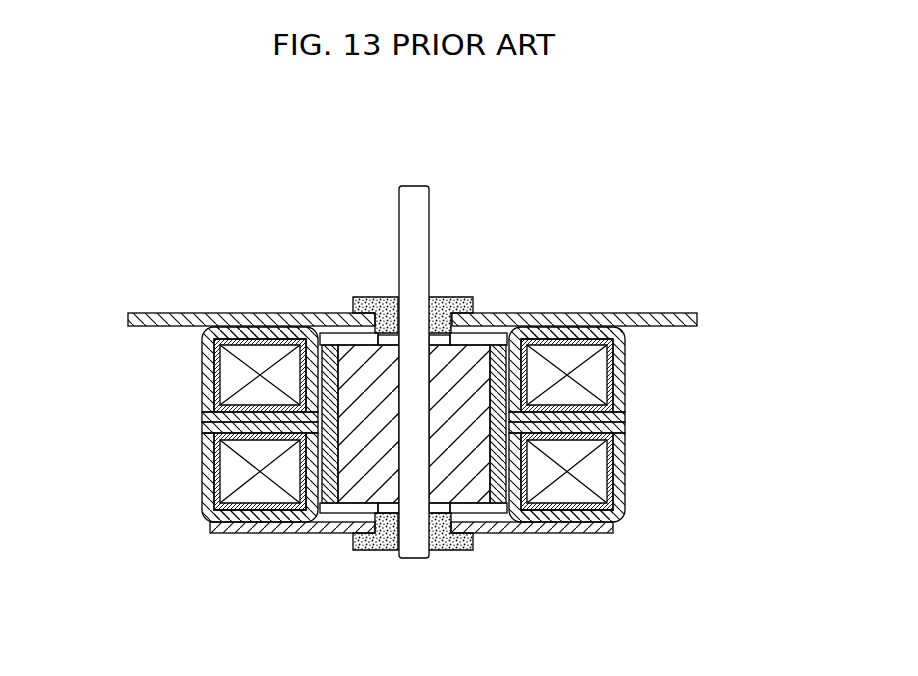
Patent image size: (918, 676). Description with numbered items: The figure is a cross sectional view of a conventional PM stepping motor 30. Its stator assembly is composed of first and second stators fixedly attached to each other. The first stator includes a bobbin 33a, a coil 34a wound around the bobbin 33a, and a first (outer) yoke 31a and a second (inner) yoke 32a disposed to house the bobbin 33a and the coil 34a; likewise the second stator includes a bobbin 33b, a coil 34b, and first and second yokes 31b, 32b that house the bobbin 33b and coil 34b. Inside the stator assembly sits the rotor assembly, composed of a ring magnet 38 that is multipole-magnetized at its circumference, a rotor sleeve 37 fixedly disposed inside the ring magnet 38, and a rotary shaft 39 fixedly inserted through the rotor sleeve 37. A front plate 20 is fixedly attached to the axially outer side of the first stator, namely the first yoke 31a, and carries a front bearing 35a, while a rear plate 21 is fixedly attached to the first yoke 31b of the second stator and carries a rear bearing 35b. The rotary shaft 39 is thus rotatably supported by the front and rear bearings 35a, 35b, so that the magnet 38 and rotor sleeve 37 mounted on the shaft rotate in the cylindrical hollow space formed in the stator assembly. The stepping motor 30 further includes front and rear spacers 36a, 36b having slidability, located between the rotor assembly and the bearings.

The front plate 20 is at (150, 312).
The rear plate 21 is at (225, 533).
The PM stepping motor 30 is at (548, 210).
The first yoke 31a is at (625, 362).
The first yoke 31b is at (625, 482).
The second yoke 32a is at (623, 418).
The second yoke 32b is at (623, 427).
The bobbin 33a is at (574, 327).
The bobbin 33b is at (585, 523).
The coil 34a is at (227, 375).
The coil 34b is at (227, 472).
The front bearing 35a is at (452, 297).
The rear bearing 35b is at (455, 550).
The front spacer 36a is at (385, 336).
The rear spacer 36b is at (381, 512).
The rotor sleeve 37 is at (356, 486).
The ring magnet 38 is at (336, 343).
The rotary shaft 39 is at (403, 218).